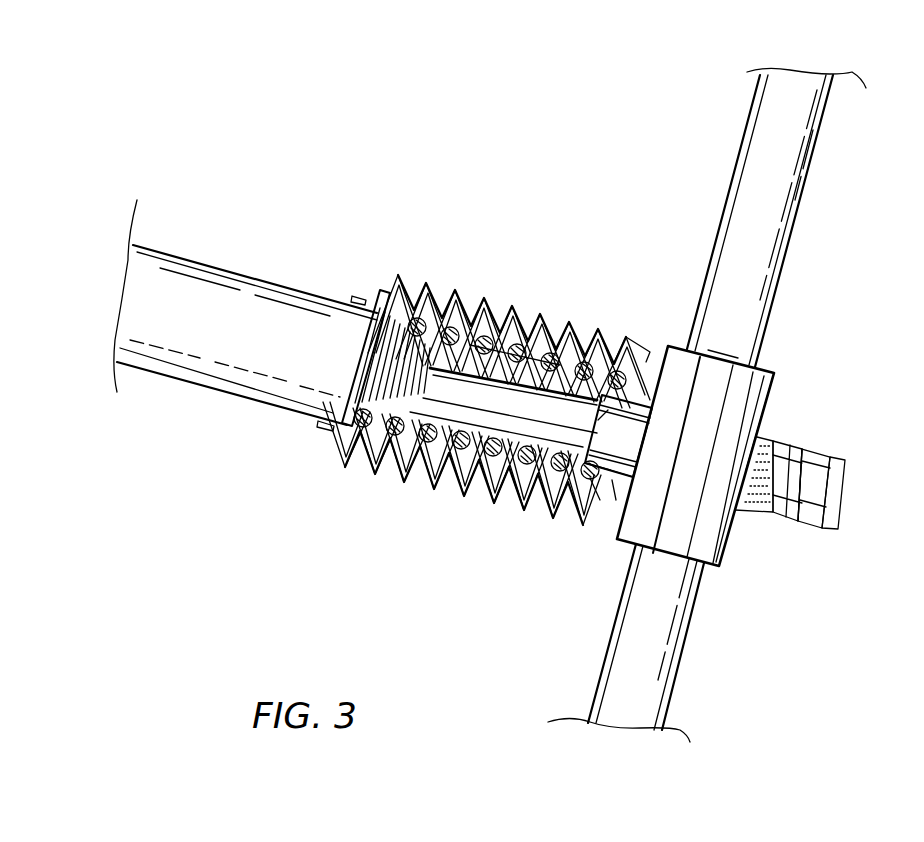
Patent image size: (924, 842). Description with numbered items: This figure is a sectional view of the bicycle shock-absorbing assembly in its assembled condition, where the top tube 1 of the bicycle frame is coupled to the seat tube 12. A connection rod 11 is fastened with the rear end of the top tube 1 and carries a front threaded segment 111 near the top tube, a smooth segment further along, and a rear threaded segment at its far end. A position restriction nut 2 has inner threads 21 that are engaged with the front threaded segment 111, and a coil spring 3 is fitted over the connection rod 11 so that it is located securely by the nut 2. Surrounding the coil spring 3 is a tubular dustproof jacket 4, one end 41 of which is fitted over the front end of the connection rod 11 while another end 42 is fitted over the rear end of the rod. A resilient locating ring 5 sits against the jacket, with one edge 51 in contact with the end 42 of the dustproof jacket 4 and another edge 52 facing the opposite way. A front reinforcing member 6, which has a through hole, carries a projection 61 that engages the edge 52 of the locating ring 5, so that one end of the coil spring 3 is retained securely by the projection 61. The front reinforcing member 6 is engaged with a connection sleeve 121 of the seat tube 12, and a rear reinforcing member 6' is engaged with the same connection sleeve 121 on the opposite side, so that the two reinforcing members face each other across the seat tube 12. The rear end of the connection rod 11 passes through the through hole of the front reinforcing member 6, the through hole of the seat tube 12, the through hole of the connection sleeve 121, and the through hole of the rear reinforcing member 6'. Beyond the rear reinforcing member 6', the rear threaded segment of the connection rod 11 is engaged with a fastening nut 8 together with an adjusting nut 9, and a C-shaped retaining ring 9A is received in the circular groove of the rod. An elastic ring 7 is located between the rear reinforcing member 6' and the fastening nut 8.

The top tube 1 is at (248, 287).
The position restriction nut 2 is at (384, 298).
The inner threads 21 is at (330, 430).
The coil spring 3 is at (489, 333).
The dustproof jacket 4 is at (438, 281).
The end of jacket 41 is at (357, 296).
The another end of jacket 42 is at (655, 352).
The resilient locating ring 5 is at (627, 347).
The edge of locating ring 51 is at (584, 522).
The another edge of locating ring 52 is at (613, 502).
The front reinforcing member 6 is at (695, 398).
The rear reinforcing member 6' is at (787, 414).
The projection 61 is at (514, 500).
The elastic ring 7 is at (744, 512).
The fastening nut 8 is at (790, 443).
The lock nut 9 is at (830, 458).
The C-shaped retaining ring 9A is at (843, 480).
The connection rod 11 is at (553, 417).
The front threaded segment 111 is at (372, 465).
The seat tube 12 is at (738, 168).
The connection sleeve 121 is at (723, 354).